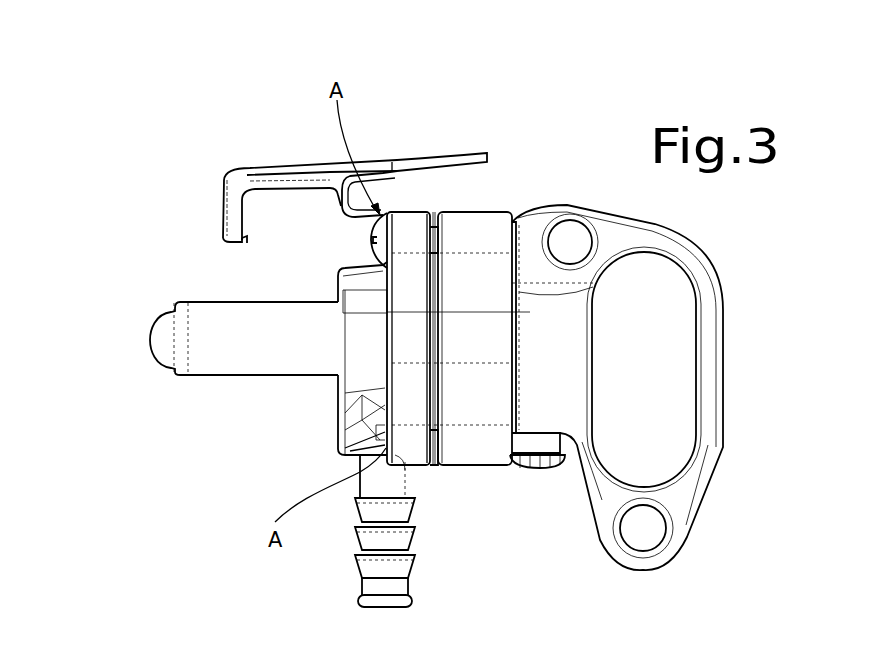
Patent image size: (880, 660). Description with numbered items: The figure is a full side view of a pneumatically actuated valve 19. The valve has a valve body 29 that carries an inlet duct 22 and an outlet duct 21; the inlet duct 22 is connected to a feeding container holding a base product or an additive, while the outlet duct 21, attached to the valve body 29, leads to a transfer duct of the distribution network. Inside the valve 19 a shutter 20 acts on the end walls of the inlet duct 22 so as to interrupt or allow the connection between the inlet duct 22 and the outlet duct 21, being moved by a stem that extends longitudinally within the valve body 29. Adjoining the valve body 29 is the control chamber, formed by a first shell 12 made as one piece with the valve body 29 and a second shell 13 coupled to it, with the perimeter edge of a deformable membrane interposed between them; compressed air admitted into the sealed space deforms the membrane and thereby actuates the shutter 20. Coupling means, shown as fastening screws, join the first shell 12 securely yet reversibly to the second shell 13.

The first shell 12 is at (414, 450).
The second shell 13 is at (473, 248).
The pneumatically actuated valve 19 is at (174, 227).
The shutter 20 is at (164, 336).
The outlet duct 21 is at (368, 538).
The inlet duct 22 is at (216, 345).
The valve body 29 is at (414, 224).